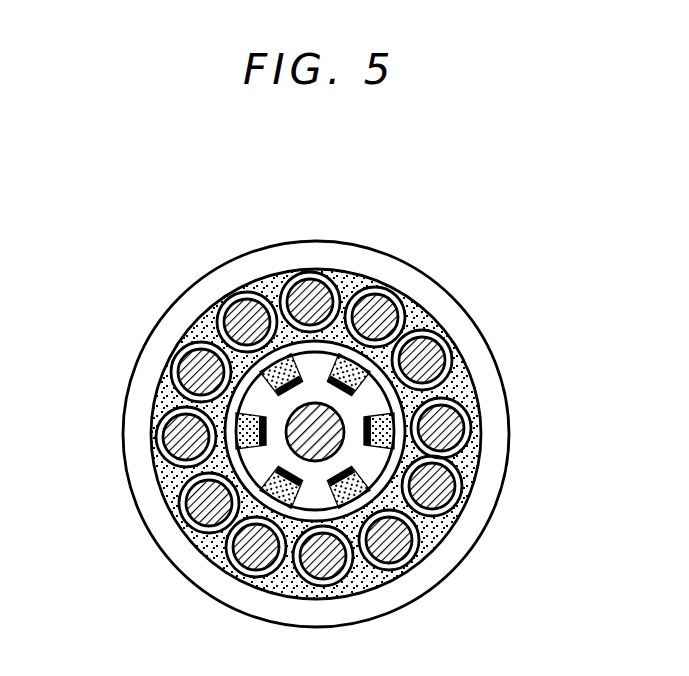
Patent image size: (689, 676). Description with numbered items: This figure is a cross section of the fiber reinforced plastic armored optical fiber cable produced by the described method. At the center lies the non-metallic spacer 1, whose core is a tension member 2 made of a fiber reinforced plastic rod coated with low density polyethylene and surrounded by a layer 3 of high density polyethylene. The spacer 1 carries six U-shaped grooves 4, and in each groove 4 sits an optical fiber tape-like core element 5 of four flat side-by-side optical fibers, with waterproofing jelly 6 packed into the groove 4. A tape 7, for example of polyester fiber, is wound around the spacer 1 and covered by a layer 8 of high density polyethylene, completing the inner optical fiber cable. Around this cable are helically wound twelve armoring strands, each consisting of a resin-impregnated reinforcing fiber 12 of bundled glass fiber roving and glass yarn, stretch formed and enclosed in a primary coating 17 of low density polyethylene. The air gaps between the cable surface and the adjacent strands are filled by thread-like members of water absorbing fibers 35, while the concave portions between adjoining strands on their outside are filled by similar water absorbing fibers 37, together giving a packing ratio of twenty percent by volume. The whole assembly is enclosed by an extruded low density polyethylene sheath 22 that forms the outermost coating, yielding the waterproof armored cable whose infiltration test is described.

The spacer 1 is at (252, 468).
The tension member 2 is at (333, 448).
The layer of high density polyethylene 3 is at (378, 405).
The U-shaped groove 4 is at (318, 358).
The optical fiber tape-like core element 5 is at (303, 487).
The jelly 6 is at (365, 492).
The tape 7 is at (430, 391).
The layer of high density polyethylene 8 is at (248, 370).
The reinforcing fiber 12 is at (297, 297).
The primary coating 17 is at (318, 273).
The sheath 22 is at (285, 250).
The water absorbing fibers 35 is at (386, 383).
The water absorbing fibers 37 is at (423, 312).